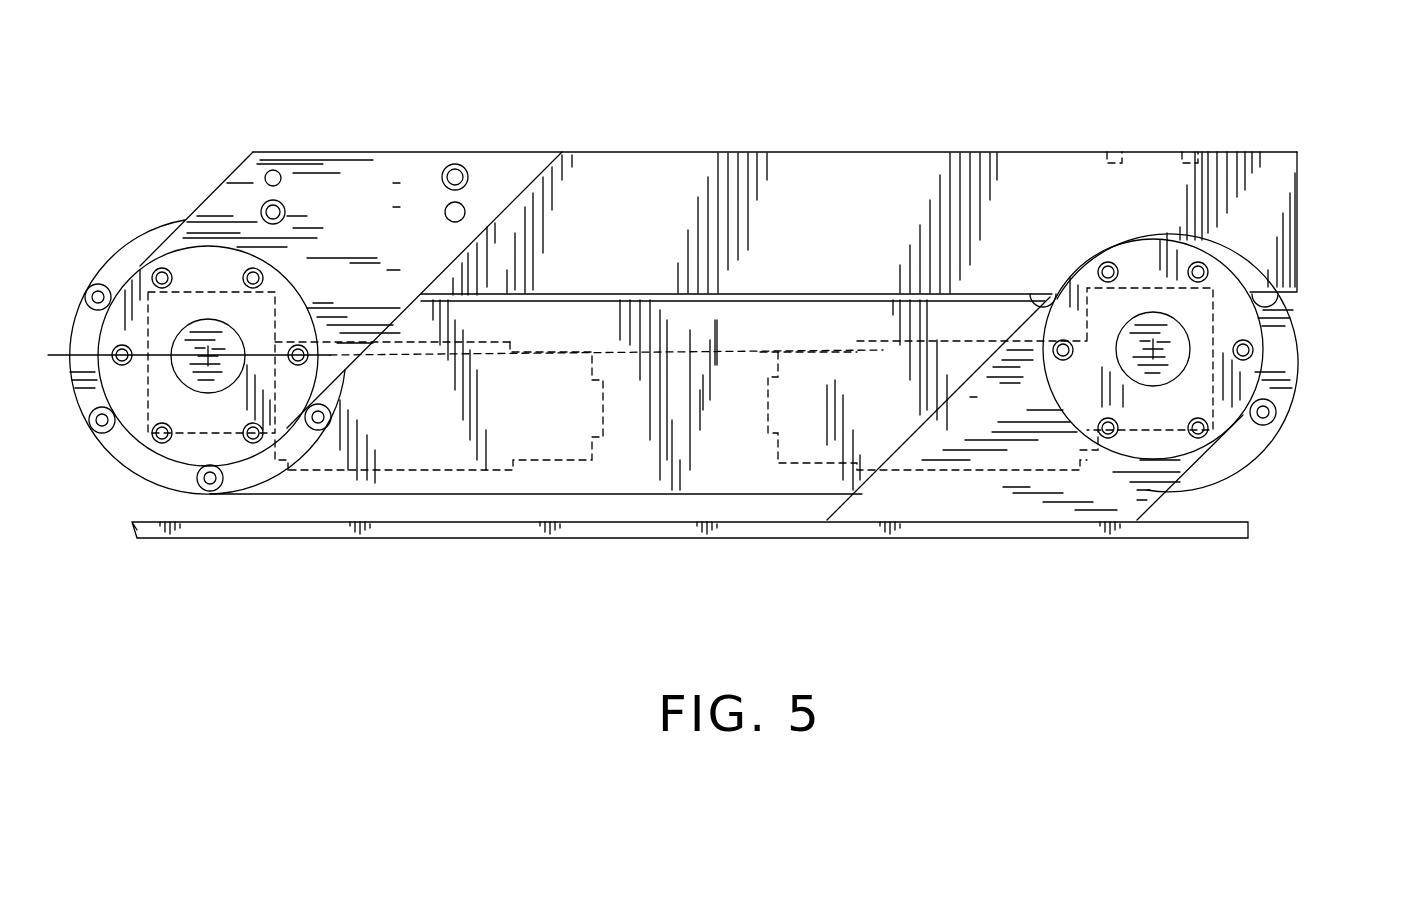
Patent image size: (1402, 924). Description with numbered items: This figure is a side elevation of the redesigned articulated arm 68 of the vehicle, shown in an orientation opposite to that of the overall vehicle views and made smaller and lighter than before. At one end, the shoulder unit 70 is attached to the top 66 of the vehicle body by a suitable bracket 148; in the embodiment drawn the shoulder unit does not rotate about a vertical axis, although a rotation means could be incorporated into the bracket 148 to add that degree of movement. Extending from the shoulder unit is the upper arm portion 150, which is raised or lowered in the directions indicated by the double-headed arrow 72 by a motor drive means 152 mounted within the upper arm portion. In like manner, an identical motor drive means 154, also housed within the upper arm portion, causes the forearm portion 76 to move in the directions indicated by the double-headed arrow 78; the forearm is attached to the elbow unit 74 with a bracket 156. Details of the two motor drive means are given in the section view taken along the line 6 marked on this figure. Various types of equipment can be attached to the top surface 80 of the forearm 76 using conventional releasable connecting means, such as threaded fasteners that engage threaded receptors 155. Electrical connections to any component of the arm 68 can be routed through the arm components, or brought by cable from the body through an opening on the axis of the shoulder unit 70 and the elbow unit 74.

The section line 6- 6 is at (867, 597).
The top of the body 66 is at (582, 540).
The articulated arm 68 is at (1292, 421).
The shoulder unit 70 is at (1268, 430).
The double-headed arrow 72 is at (190, 197).
The elbow unit 74 is at (128, 432).
The forearm portion 76 is at (1298, 215).
The double-headed arrow 78 is at (1085, 35).
The top surface of the forearm 80 is at (1163, 150).
The bracket 148 is at (1159, 498).
The upper arm portion 150 is at (682, 493).
The motor drive means 152 is at (970, 470).
The motor drive means 154 is at (443, 470).
The threaded receptors 155 is at (1193, 150).
The bracket 156 is at (540, 176).